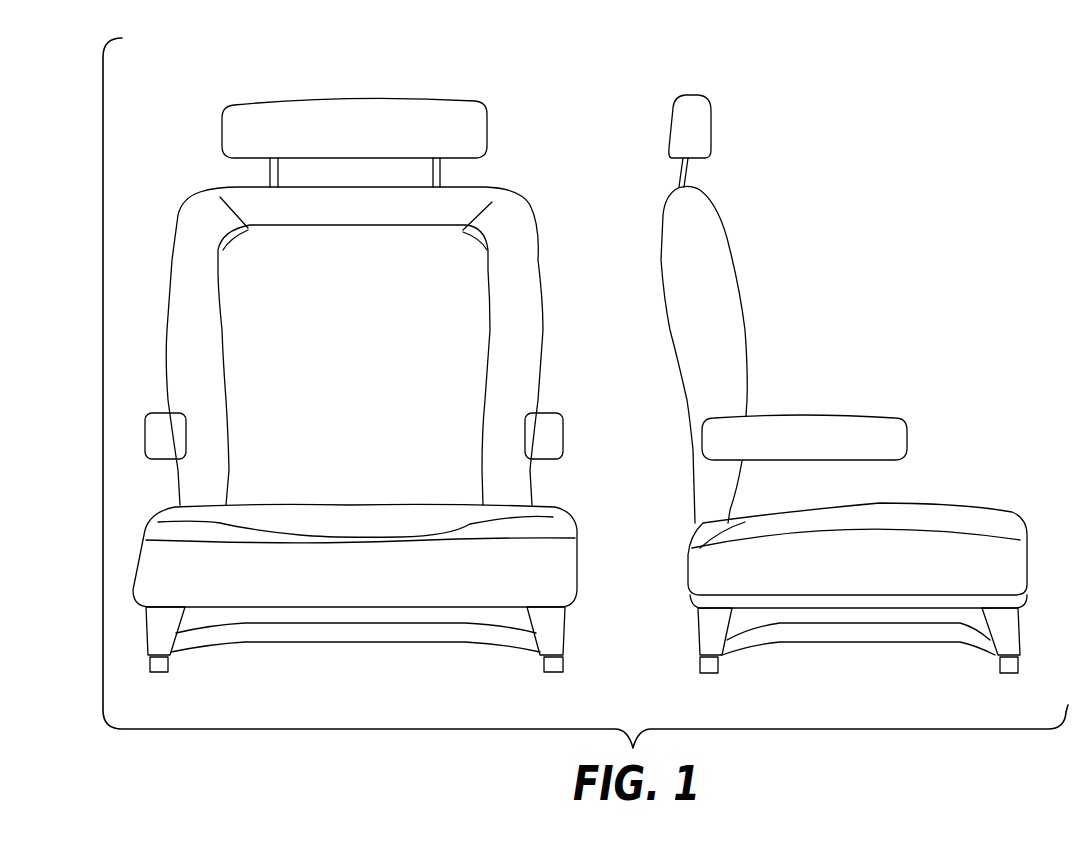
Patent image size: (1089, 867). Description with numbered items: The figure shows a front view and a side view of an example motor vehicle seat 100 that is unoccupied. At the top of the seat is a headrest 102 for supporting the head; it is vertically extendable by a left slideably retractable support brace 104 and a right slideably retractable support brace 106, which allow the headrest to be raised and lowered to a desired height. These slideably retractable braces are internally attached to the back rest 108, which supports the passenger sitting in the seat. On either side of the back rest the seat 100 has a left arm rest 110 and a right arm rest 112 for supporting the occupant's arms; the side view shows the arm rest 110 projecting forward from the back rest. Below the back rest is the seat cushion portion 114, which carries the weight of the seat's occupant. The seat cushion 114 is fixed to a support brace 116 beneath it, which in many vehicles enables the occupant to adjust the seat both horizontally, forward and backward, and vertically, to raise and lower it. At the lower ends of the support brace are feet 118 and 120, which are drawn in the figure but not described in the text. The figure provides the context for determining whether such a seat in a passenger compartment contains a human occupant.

The seat 100 is at (826, 80).
The headrest 102 is at (355, 97).
The left slideably retractable support brace 104 is at (268, 175).
The right slideably retractable support brace 106 is at (442, 175).
The back rest 108 is at (540, 260).
The left arm rest 110 is at (158, 412).
The right arm rest 112 is at (550, 412).
The seat cushion portion 114 is at (567, 508).
The support brace 116 is at (567, 628).
The foot 118 is at (170, 660).
The foot 120 is at (540, 660).